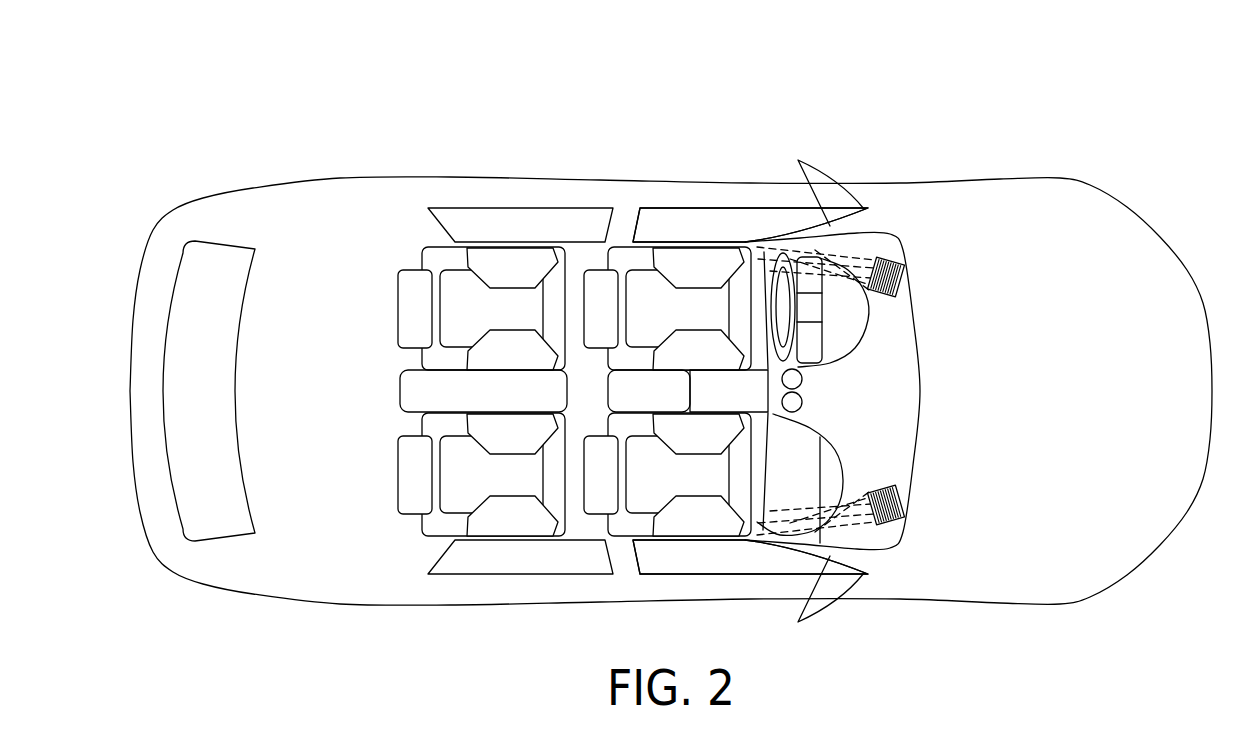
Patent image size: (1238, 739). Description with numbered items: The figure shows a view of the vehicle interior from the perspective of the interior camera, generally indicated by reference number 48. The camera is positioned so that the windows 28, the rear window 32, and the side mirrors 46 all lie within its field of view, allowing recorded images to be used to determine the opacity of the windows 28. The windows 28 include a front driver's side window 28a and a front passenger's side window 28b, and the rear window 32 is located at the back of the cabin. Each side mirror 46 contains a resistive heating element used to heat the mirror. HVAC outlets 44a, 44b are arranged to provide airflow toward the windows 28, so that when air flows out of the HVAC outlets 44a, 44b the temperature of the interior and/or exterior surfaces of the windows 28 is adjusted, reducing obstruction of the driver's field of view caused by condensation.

The windows 28 is at (520, 223).
The front driver's side window 28a is at (719, 222).
The front passenger's side window 28b is at (719, 560).
The rear window 32 is at (198, 388).
The HVAC outlet 44a is at (889, 258).
The HVAC outlet 44b is at (889, 524).
The side mirror 46 is at (823, 183).
The view from a perspective of the interior camera 48 is at (828, 100).